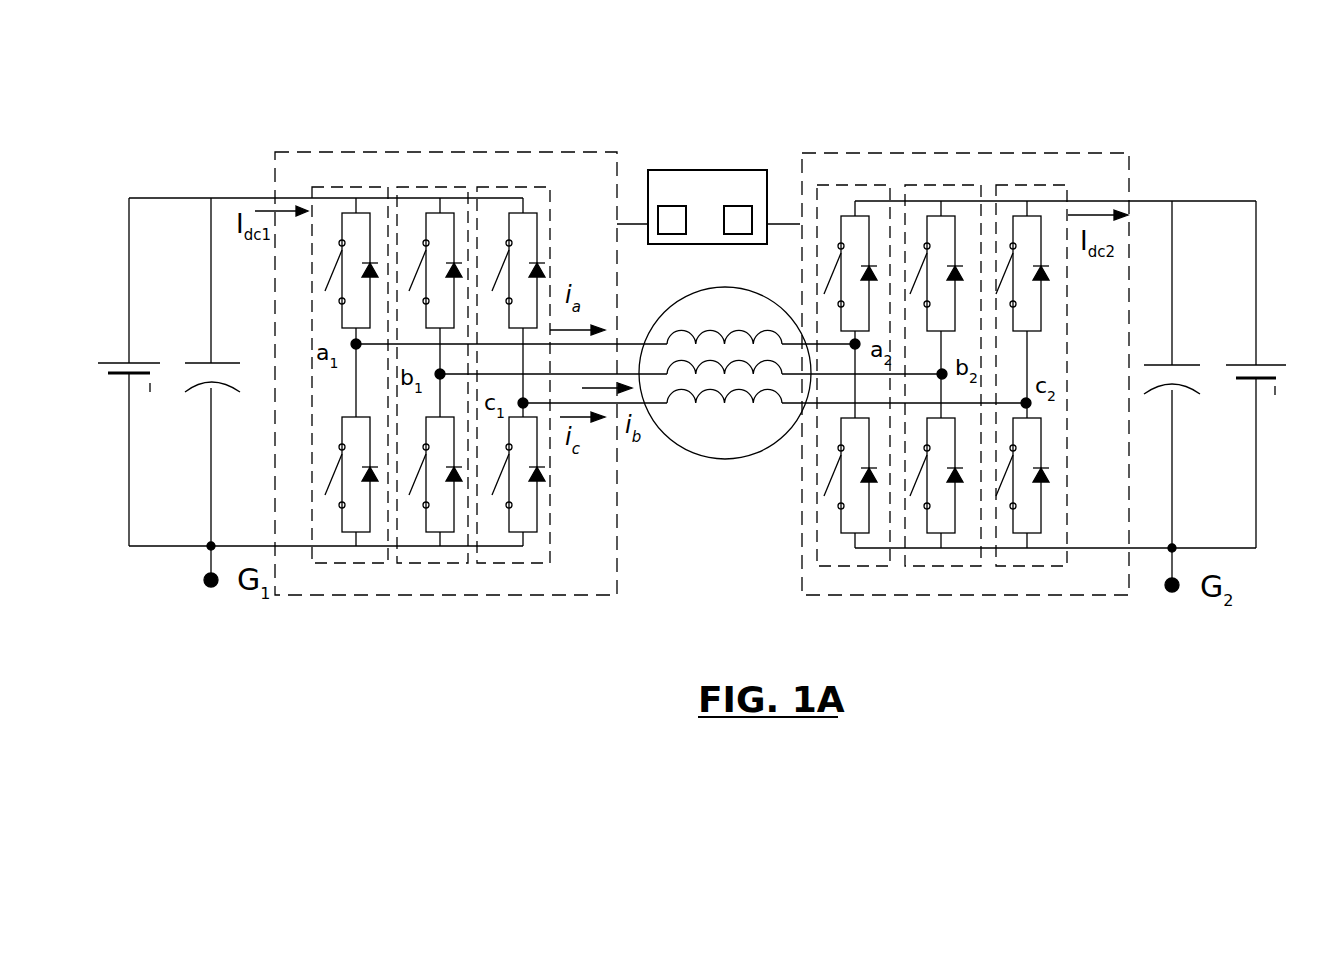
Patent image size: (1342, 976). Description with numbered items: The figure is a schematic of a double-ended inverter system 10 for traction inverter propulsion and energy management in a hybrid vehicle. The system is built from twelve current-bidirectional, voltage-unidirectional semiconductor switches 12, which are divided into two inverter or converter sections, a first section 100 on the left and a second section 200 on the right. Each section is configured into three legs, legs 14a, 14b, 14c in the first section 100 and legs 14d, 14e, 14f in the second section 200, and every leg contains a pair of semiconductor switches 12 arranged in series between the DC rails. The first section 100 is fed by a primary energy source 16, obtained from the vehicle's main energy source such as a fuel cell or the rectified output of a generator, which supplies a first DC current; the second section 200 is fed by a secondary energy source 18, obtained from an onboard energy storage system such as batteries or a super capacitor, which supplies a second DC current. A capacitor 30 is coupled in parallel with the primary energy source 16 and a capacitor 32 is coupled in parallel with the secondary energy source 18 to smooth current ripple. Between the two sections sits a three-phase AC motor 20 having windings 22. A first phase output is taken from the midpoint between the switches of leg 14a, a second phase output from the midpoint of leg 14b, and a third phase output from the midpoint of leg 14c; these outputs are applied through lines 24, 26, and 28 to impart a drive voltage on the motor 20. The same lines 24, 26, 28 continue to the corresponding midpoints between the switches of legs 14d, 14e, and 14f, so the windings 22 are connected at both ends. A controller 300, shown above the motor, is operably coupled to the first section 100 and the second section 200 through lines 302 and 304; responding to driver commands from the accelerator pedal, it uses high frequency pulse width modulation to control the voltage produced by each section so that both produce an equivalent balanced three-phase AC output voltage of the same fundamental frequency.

The double-ended inverter system 10 is at (1084, 72).
The semiconductor switch 12 is at (372, 245).
The leg 14a is at (329, 186).
The leg 14b is at (413, 187).
The leg 14c is at (515, 187).
The leg 14d is at (836, 185).
The leg 14e is at (948, 185).
The leg 14f is at (1043, 187).
The primary energy source 16 is at (118, 362).
The secondary energy source 18 is at (1264, 364).
The three-phase AC motor 20 is at (718, 460).
The windings 22 is at (703, 392).
The line 24 is at (641, 345).
The line 26 is at (786, 404).
The line 28 is at (791, 403).
The capacitor 30 is at (198, 362).
The capacitor 32 is at (1183, 364).
The first section 100 is at (535, 597).
The second section 200 is at (1030, 598).
The controller 300 is at (708, 170).
The line 302 is at (638, 222).
The line 304 is at (786, 222).